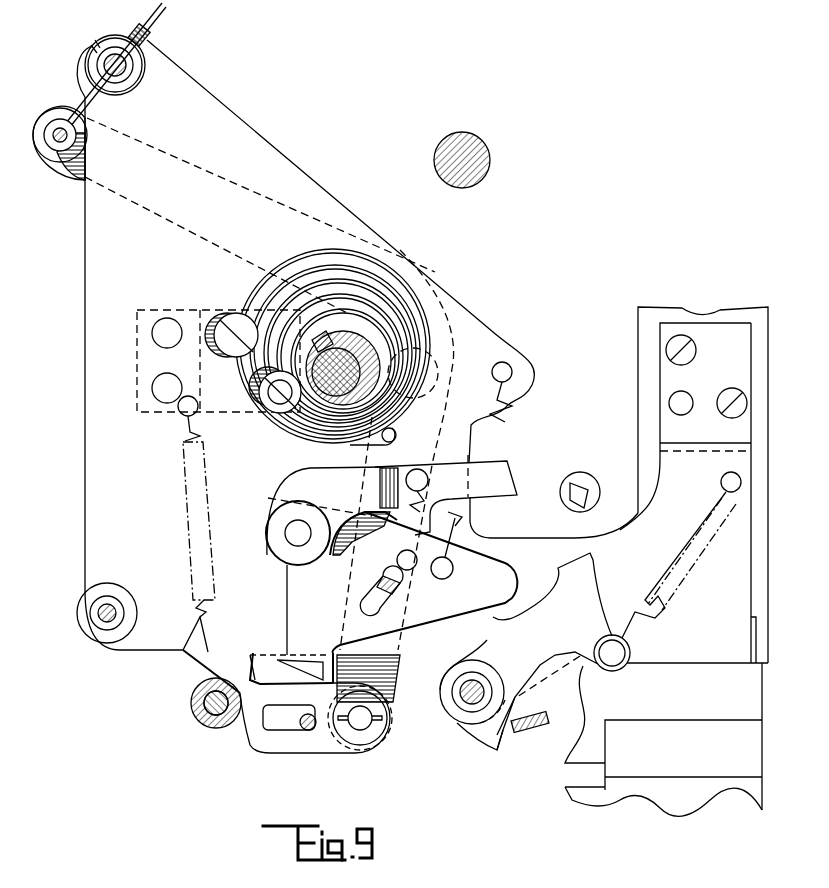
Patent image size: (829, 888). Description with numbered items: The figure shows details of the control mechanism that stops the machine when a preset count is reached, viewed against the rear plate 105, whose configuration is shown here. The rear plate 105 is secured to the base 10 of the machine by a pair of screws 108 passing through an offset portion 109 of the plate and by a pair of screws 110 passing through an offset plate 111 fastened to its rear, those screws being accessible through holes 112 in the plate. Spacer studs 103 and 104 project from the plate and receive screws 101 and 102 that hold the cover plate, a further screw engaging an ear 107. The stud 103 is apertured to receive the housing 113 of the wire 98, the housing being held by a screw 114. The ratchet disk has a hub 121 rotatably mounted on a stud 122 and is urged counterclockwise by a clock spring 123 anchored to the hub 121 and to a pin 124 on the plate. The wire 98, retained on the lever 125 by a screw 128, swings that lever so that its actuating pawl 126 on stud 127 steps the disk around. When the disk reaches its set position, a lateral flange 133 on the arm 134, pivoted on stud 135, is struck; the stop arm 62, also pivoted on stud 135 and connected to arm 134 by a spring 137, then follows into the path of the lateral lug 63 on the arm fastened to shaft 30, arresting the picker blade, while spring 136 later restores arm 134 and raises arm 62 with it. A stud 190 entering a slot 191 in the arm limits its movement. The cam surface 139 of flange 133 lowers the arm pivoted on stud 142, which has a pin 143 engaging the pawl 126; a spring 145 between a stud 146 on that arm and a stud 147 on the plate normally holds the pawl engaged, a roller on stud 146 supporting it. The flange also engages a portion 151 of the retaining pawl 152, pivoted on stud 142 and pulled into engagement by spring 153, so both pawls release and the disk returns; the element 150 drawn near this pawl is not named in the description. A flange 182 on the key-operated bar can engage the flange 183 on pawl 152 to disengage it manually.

The base 10 is at (638, 329).
The shaft 30 is at (440, 140).
The stop arm 62 is at (446, 498).
The lateral lug 63 is at (580, 492).
The wire 98 is at (163, 7).
The screw 101 is at (122, 80).
The screw 102 is at (107, 604).
The spacer stud 103 is at (140, 70).
The spacer stud 104 is at (128, 605).
The rear plate 105 is at (310, 180).
The ear 107 is at (752, 638).
The screws 108 is at (726, 392).
The offset portion 109 is at (660, 375).
The screws 110 is at (262, 386).
The offset plate 111 is at (164, 309).
The holes 112 is at (218, 357).
The housing 113 is at (147, 34).
The screw 114 is at (104, 36).
The hub 121 is at (355, 336).
The stud 122 is at (330, 390).
The clock spring 123 is at (262, 290).
The pin 124 is at (395, 431).
The lever 125 is at (75, 170).
The actuating pawl 126 is at (308, 752).
The stud 127 is at (368, 724).
The screw 128 is at (56, 128).
The lateral flange 133 is at (318, 647).
The arm 134 is at (288, 607).
The stud 135 is at (298, 533).
The spring 136 is at (492, 423).
The spring 137 is at (402, 551).
The cam surface 139 is at (278, 659).
The stud 142 is at (478, 681).
The pin 143 is at (308, 714).
The spring 145 is at (210, 540).
The stud 146 is at (192, 705).
The stud 147 is at (186, 418).
The lever 150 is at (512, 577).
The portion 151 is at (489, 623).
The retaining pawl 152 is at (561, 644).
The spring 153 is at (664, 585).
The flange 182 is at (520, 716).
The flange 183 is at (497, 750).
The stud 190 is at (372, 605).
The slot 191 is at (396, 594).